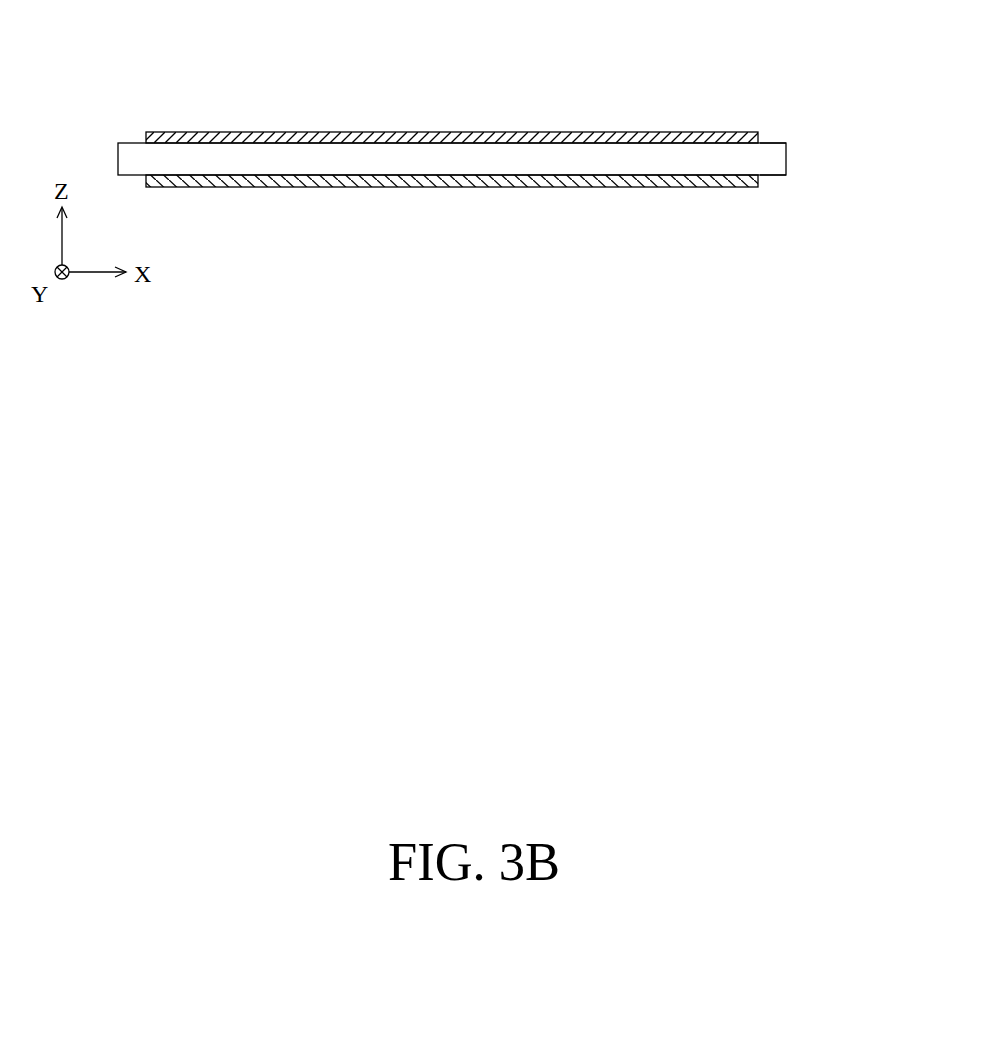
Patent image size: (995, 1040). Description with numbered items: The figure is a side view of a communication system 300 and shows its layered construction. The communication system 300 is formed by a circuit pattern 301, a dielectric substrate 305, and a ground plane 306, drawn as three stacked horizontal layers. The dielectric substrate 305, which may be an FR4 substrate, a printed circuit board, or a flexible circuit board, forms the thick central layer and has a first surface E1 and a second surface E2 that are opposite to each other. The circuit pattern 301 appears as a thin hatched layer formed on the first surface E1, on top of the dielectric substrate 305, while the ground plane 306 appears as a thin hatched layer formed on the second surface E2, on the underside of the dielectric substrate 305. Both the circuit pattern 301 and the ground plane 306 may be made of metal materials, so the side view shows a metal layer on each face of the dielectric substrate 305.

The communication system 300 is at (74, 53).
The circuit pattern 301 is at (612, 132).
The dielectric substrate 305 is at (786, 158).
The ground plane 306 is at (612, 187).
The first surface E1 is at (786, 143).
The second surface E2 is at (786, 175).